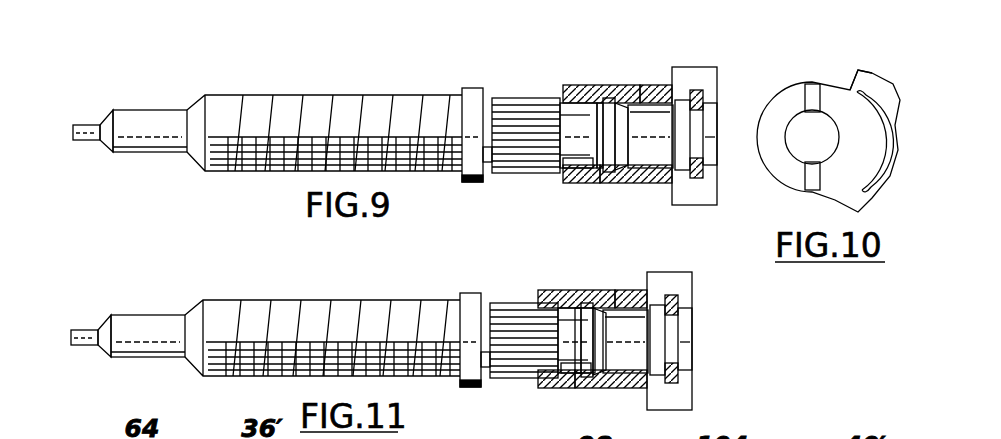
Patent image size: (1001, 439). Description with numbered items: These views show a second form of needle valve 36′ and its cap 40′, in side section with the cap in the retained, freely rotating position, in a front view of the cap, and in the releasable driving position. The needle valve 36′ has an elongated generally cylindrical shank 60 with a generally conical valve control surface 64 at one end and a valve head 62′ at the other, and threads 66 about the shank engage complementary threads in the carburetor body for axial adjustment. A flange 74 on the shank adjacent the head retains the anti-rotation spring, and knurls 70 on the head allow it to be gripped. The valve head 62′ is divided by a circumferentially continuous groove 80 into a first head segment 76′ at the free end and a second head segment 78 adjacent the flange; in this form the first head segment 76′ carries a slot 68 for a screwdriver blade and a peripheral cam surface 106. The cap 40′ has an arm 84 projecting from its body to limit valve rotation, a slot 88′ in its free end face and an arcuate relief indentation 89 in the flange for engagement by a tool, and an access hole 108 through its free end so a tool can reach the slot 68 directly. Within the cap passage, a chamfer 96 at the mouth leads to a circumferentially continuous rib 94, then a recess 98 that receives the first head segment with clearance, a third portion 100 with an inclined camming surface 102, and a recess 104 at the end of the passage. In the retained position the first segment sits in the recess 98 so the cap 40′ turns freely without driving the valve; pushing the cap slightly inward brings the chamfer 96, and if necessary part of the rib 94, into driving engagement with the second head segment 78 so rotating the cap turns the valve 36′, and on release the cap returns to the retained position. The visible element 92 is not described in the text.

In FIG. 9, the needle valve 36′ is at (240, 78).
In FIG. 11, the needle valve 36′ is at (268, 284).
In FIG. 9, the cap 40′ is at (762, 82).
In FIG. 11, the cap 40′ is at (735, 317).
In FIG. 9, the shank 60 is at (285, 100).
In FIG. 11, the shank 60 is at (330, 305).
In FIG. 9, the valve head 62′ is at (516, 88).
In FIG. 11, the valve head 62′ is at (523, 371).
In FIG. 9, the valve control surface 64 is at (99, 110).
In FIG. 11, the valve control surface 64 is at (96, 315).
In FIG. 9, the threads 66 is at (240, 172).
In FIG. 11, the threads 66 is at (235, 378).
In FIG. 9, the slot 68 is at (620, 140).
In FIG. 11, the slot 68 is at (602, 345).
In FIG. 9, the knurls 70 is at (508, 102).
In FIG. 11, the knurls 70 is at (505, 378).
In FIG. 9, the flange 74 is at (468, 92).
In FIG. 11, the flange 74 is at (470, 298).
In FIG. 9, the first head segment 76′ is at (612, 120).
In FIG. 11, the first head segment 76′ is at (612, 300).
In FIG. 9, the second head segment 78 is at (512, 172).
In FIG. 11, the second head segment 78 is at (505, 305).
In FIG. 9, the groove 80 is at (570, 118).
In FIG. 11, the groove 80 is at (575, 380).
In FIG. 9, the arm 84 is at (705, 72).
In FIG. 10, the arm 84 is at (880, 75).
In FIG. 11, the arm 84 is at (672, 280).
In FIG. 9, the slot 88′ is at (720, 176).
In FIG. 10, the slot 88′ is at (812, 90).
In FIG. 11, the slot 88′ is at (690, 303).
In FIG. 10, the arcuate relief indentation 89 is at (855, 95).
In FIG. 10, the cam body 92 is at (893, 128).
In FIG. 9, the rib 94 is at (575, 176).
In FIG. 11, the rib 94 is at (530, 380).
In FIG. 9, the chamfer 96 is at (566, 108).
In FIG. 11, the chamfer 96 is at (530, 303).
In FIG. 9, the recess 98 is at (590, 104).
In FIG. 11, the recess 98 is at (565, 305).
In FIG. 9, the third portion 100 is at (635, 164).
In FIG. 11, the third portion 100 is at (610, 364).
In FIG. 9, the inclined camming surface 102 is at (618, 103).
In FIG. 11, the inclined camming surface 102 is at (595, 292).
In FIG. 9, the recess 104 is at (672, 85).
In FIG. 11, the recess 104 is at (645, 290).
In FIG. 9, the peripheral cam surface 106 is at (587, 183).
In FIG. 11, the peripheral cam surface 106 is at (575, 290).
In FIG. 9, the access hole 108 is at (712, 118).
In FIG. 10, the access hole 108 is at (795, 139).
In FIG. 11, the access hole 108 is at (682, 372).